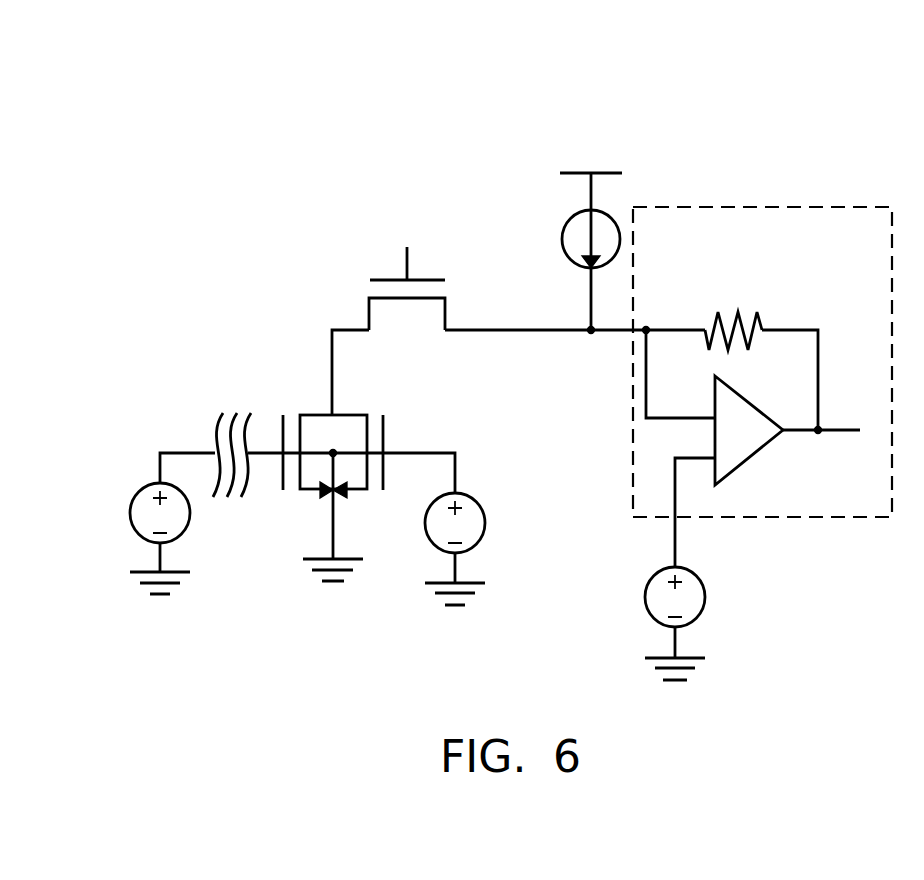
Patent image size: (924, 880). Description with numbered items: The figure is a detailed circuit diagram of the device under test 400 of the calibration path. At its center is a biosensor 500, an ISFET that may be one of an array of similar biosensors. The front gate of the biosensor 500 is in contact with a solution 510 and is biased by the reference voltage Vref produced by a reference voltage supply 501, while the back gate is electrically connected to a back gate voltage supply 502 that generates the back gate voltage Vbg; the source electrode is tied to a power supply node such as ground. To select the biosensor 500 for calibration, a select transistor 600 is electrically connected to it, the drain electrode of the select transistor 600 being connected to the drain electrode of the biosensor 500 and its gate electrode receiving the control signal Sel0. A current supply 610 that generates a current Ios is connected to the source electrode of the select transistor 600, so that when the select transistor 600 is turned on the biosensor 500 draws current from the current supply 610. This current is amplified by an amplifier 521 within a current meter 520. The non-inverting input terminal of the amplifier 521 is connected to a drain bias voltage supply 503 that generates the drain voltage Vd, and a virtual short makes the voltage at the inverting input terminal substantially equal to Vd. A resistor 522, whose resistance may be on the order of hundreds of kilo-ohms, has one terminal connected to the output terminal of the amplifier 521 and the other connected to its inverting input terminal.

The device under test 400 is at (544, 64).
The biosensor 500 is at (314, 396).
The reference voltage supply 501 is at (136, 474).
The back gate voltage supply 502 is at (472, 478).
The drain bias voltage supply 503 is at (649, 557).
The solution 510 is at (203, 419).
The current meter 520 is at (767, 187).
The amplifier 521 is at (765, 468).
The resistor 522 is at (739, 290).
The select transistor 600 is at (372, 266).
The current supply 610 is at (560, 208).